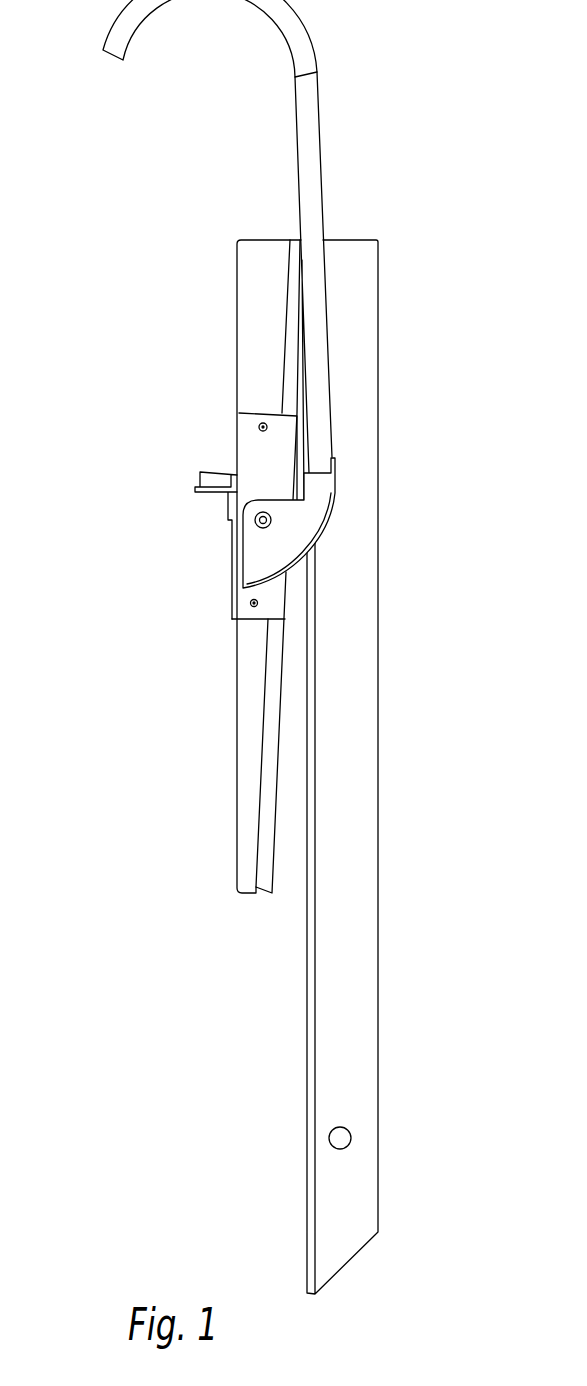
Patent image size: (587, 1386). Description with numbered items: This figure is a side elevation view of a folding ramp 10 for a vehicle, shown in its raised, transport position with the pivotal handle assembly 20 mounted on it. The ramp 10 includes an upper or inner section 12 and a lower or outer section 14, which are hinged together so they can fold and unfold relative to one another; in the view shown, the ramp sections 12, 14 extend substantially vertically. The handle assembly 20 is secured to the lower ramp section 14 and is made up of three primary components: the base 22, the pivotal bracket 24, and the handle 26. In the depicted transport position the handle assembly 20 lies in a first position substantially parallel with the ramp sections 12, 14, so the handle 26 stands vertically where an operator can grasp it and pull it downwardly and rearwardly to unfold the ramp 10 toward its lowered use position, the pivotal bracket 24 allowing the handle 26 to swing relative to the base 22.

The folding ramp 10 is at (297, 647).
The upper or inner section 12 is at (368, 745).
The lower or outer section 14 is at (252, 718).
The pivotal handle assembly 20 is at (268, 250).
The base 22 is at (248, 441).
The pivotal bracket 24 is at (302, 530).
The handle 26 is at (312, 142).